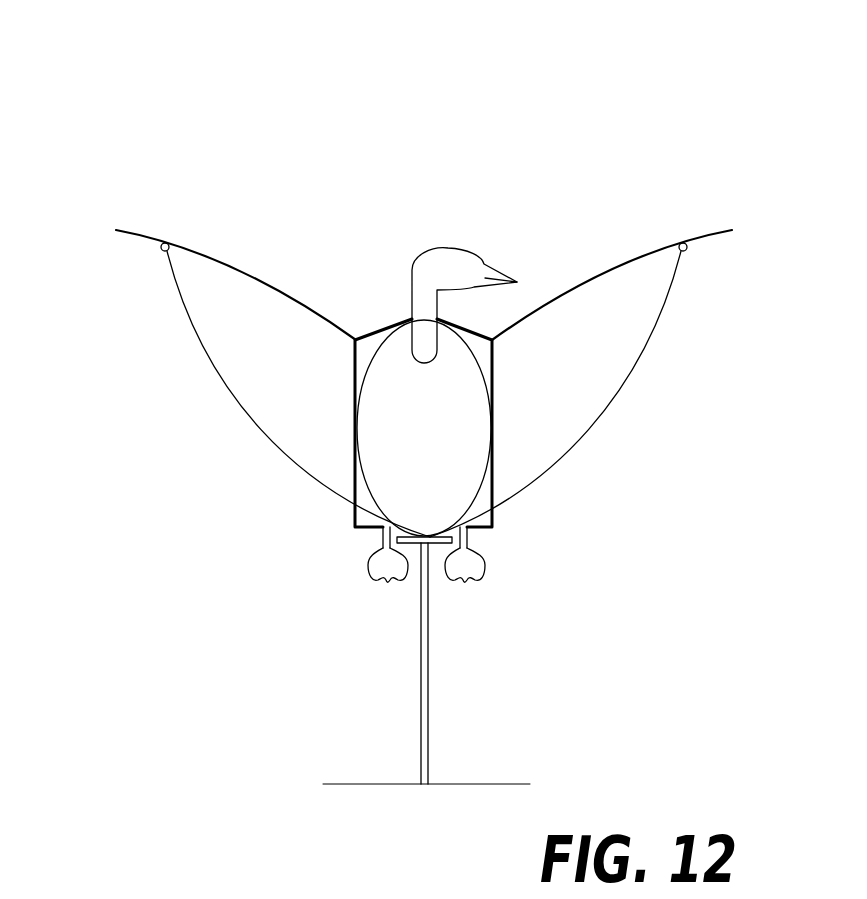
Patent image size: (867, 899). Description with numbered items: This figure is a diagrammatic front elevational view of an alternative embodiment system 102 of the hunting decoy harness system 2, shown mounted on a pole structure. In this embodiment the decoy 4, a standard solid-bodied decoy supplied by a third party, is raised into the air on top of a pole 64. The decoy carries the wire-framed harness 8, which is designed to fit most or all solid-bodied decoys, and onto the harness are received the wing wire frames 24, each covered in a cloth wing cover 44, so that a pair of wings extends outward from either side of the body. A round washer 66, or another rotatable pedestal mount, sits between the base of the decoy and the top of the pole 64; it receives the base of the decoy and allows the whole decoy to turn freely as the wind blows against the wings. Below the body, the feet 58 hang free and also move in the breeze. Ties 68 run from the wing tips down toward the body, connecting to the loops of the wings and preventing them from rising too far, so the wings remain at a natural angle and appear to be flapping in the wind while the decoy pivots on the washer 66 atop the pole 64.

The alternative embodiment system 102 is at (216, 122).
The hunting decoy harness system 2 is at (549, 233).
The decoy 4 is at (430, 247).
The wire-framed harness 8 is at (334, 369).
The wing wire frames 24 is at (108, 157).
The cloth wing covers 44 is at (134, 222).
The ties 68 is at (215, 368).
The round washer 66 is at (427, 537).
The feet 58 is at (500, 563).
The pole 64 is at (428, 693).